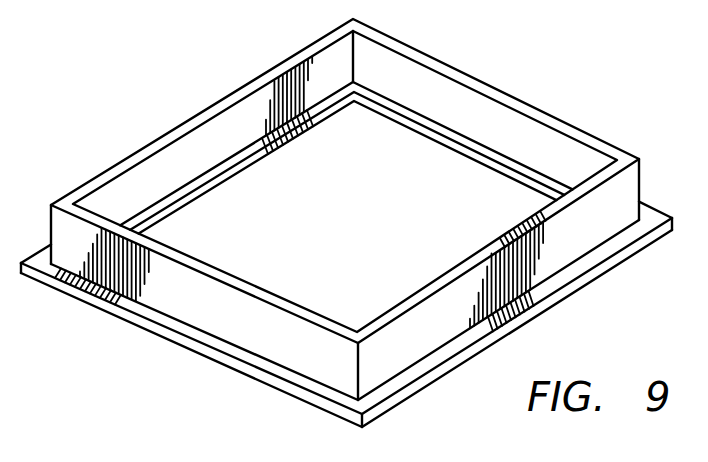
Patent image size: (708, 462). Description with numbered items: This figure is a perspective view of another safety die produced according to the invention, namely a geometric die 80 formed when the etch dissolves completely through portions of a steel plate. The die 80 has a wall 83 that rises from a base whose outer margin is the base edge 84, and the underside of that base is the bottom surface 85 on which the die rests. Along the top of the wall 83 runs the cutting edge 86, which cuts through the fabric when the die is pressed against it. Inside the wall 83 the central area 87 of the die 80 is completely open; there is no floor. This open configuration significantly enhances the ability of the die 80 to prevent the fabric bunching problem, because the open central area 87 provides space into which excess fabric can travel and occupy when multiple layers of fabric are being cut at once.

The geometric die 80 is at (462, 48).
The wall 83 is at (275, 345).
The base edge 84 is at (145, 321).
The bottom surface 85 is at (343, 420).
The cutting edge 86 is at (569, 130).
The central area 87 is at (349, 230).